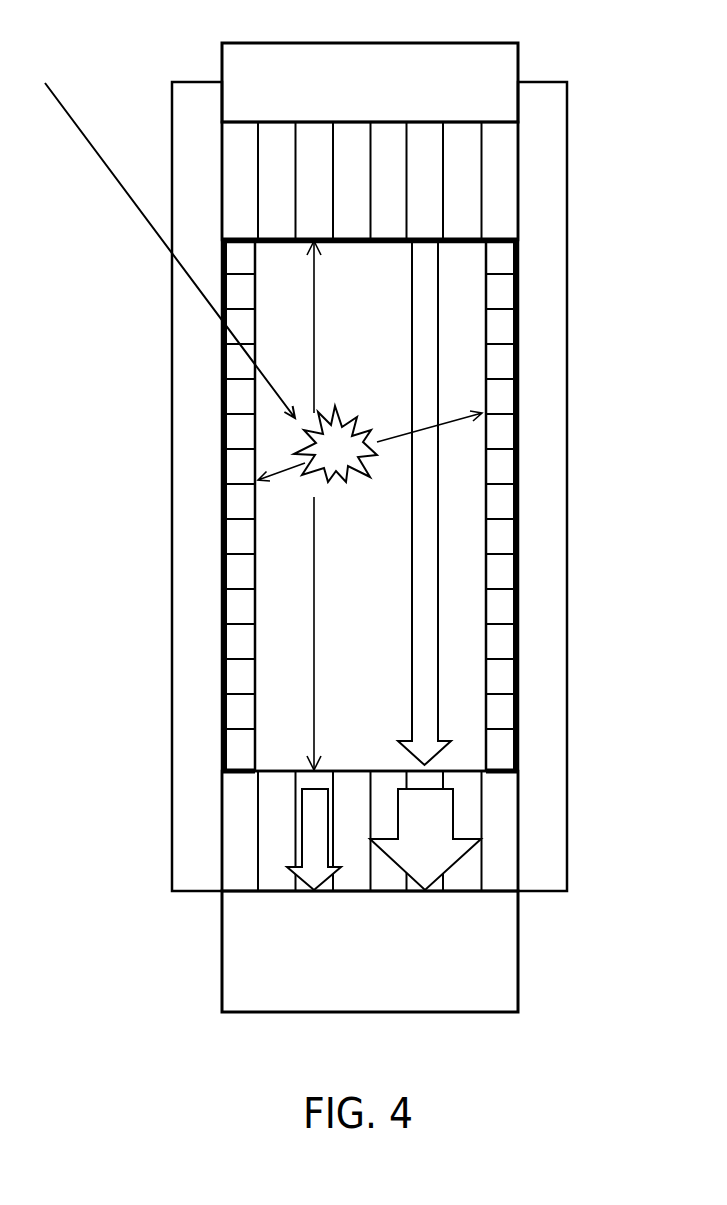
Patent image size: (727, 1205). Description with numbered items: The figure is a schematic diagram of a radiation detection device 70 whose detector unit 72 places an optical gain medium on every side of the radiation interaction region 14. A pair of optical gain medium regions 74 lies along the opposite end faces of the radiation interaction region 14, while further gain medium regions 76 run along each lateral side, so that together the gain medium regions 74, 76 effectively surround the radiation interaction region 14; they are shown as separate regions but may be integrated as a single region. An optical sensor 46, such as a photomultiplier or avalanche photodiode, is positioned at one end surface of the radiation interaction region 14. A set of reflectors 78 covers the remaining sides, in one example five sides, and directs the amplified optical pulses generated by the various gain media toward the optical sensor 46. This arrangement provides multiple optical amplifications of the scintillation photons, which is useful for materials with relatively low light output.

The device 70 is at (589, 31).
The detector unit 72 is at (375, 43).
The optical gain medium regions 74 is at (222, 172).
The gain medium regions 76 is at (222, 392).
The reflectors 78 is at (255, 43).
The radiation interaction region 14 is at (255, 542).
The optical sensor 46 is at (222, 956).